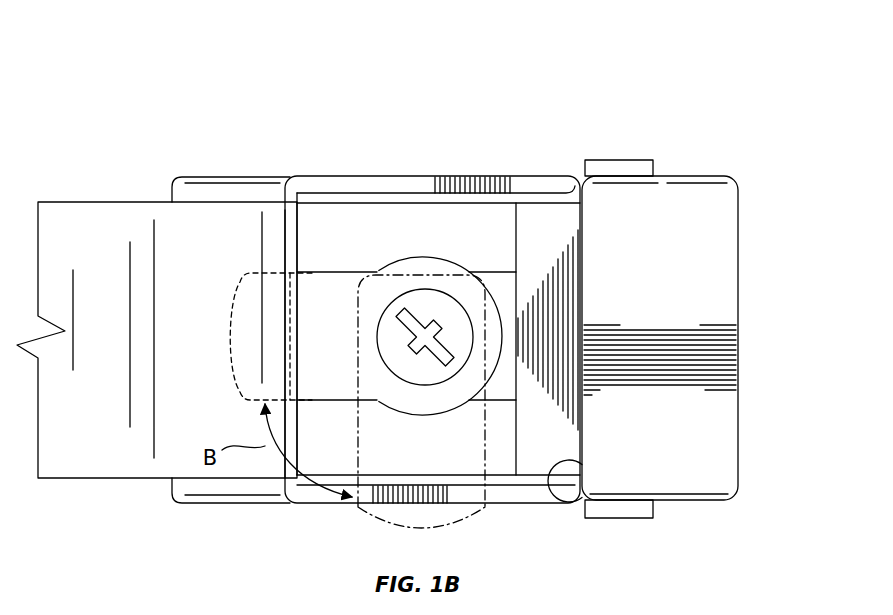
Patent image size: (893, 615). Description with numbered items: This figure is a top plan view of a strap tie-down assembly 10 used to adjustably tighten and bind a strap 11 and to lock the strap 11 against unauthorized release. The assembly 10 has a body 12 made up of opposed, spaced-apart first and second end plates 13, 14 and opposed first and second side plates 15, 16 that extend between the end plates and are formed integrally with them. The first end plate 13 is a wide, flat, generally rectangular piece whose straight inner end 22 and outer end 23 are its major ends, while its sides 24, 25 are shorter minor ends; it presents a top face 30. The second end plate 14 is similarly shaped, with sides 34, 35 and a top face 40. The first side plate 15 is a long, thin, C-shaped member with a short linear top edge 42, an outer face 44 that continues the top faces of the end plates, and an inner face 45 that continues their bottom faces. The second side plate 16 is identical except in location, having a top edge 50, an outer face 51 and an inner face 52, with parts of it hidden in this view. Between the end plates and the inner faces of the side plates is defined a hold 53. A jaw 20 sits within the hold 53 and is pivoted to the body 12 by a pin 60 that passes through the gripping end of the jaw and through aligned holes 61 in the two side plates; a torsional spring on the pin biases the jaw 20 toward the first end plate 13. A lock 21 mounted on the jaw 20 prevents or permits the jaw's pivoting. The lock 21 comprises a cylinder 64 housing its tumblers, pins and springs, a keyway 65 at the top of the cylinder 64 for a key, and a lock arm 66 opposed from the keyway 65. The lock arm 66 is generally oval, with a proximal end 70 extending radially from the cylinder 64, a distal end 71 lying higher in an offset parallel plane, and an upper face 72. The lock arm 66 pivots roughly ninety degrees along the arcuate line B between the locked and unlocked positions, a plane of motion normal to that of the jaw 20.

The strap tie-down assembly 10 is at (708, 82).
The strap 11 is at (95, 200).
The body 12 is at (170, 188).
The first end plate 13 is at (720, 176).
The second end plate 14 is at (238, 176).
The first side plate 15 is at (508, 505).
The second side plate 16 is at (520, 176).
The jaw 20 is at (370, 200).
The lock 21 is at (467, 307).
The inner end 22 is at (565, 505).
The outer end 23 is at (742, 482).
The side 24 is at (697, 502).
The side 25 is at (663, 176).
The top face 30 is at (706, 260).
The side 34 is at (203, 505).
The side 35 is at (204, 176).
The top face 40 is at (255, 492).
The top edge 42 is at (328, 504).
The outer face 44 is at (540, 505).
The inner face 45 is at (533, 478).
The top edge 50 is at (455, 183).
The outer face 51 is at (333, 175).
The inner face 52 is at (338, 200).
The hold 53 is at (433, 222).
The pin 60 is at (615, 520).
The holes 61 is at (622, 175).
The cylinder 64 is at (500, 315).
The keyway 65 is at (436, 360).
The lock arm 66 is at (228, 332).
The proximal end 70 is at (440, 265).
The distal end 71 is at (240, 284).
The upper face 72 is at (337, 352).